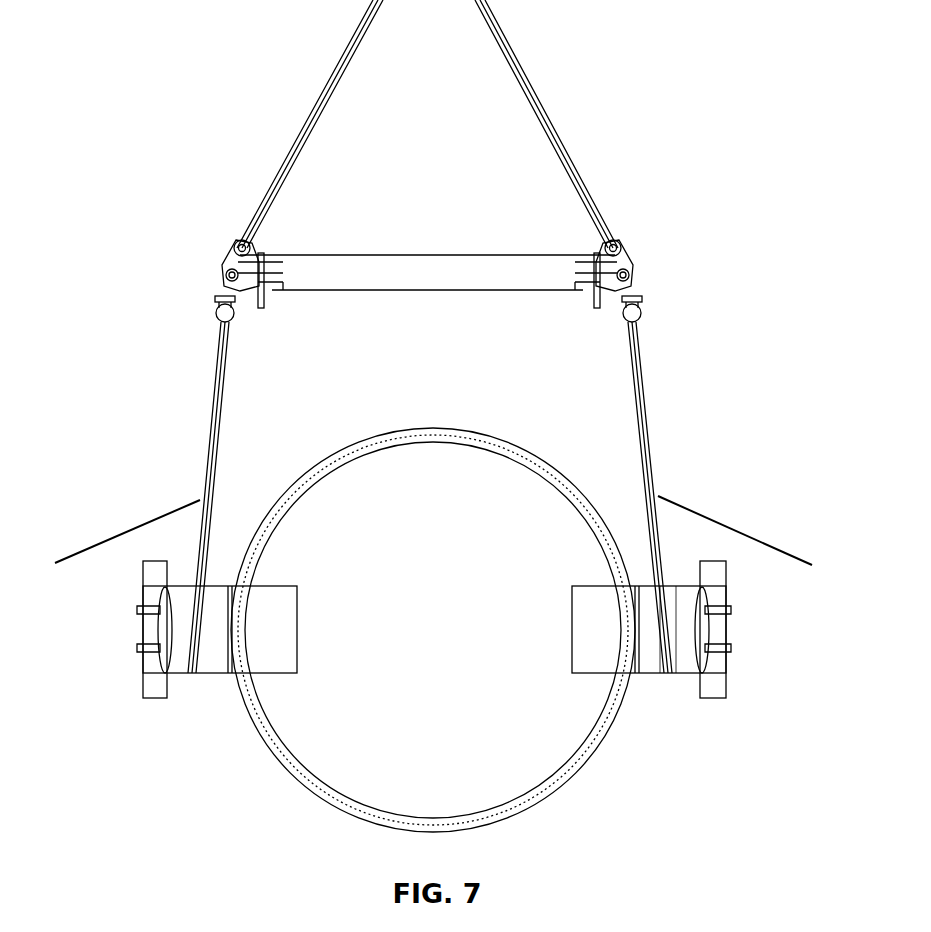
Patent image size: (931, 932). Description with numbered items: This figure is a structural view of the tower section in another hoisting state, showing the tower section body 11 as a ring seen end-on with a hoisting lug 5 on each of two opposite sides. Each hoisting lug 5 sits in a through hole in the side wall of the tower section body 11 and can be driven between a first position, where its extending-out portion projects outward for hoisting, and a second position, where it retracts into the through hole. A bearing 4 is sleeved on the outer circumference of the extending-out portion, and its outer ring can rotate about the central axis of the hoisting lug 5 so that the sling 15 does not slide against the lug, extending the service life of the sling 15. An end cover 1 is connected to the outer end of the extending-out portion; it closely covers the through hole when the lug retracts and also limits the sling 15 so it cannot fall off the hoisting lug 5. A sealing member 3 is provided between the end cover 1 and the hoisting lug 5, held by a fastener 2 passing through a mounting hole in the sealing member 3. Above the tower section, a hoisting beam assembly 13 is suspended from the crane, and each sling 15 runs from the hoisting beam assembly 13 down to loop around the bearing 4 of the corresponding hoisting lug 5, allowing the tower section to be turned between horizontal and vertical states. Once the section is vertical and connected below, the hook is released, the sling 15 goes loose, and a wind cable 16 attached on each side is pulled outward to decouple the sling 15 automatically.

The end cover 1 is at (715, 575).
The fastener 2 is at (722, 655).
The sealing member 3 is at (726, 638).
The bearing 4 is at (683, 660).
The hoisting lug 5 is at (587, 627).
The tower section body 11 is at (597, 750).
The hoisting beam assembly 13 is at (220, 295).
The sling 15 is at (208, 398).
The wind cable 16 is at (118, 533).